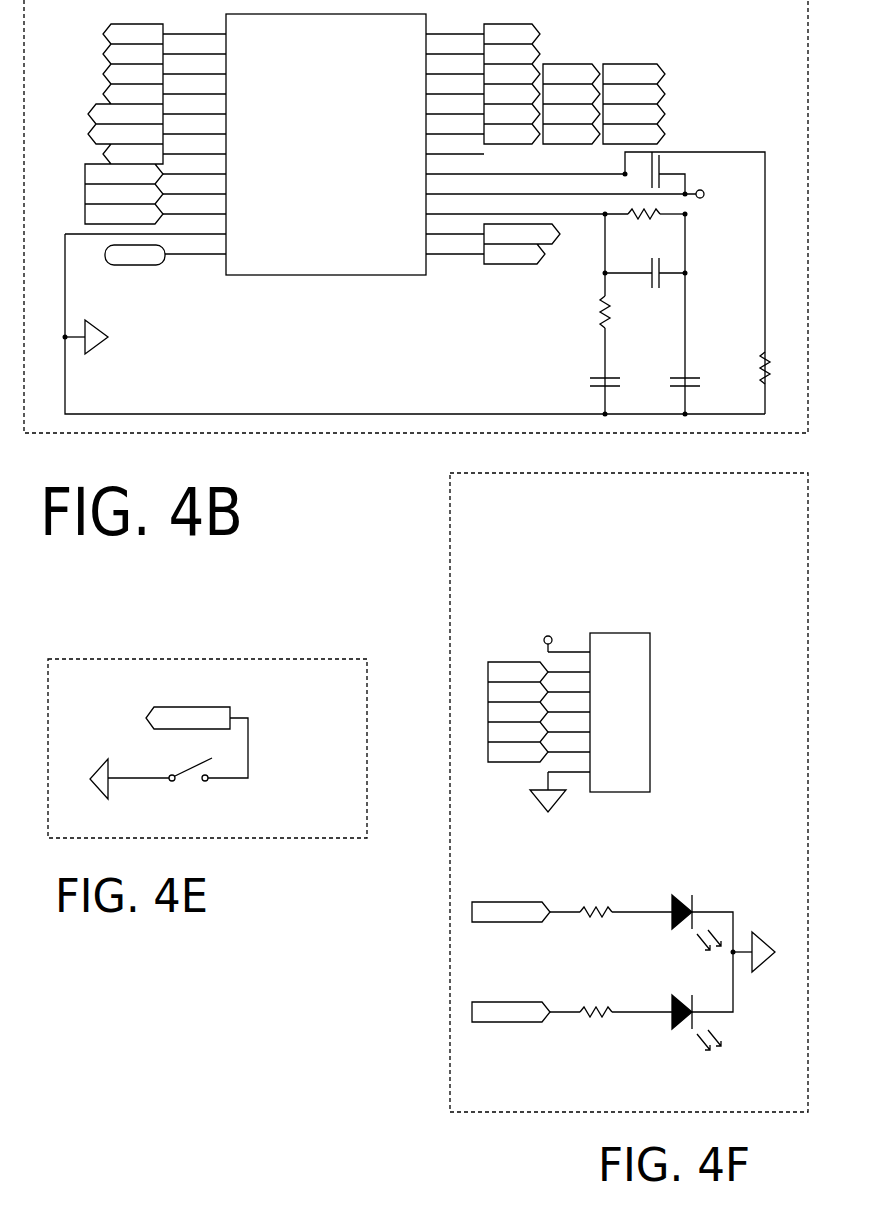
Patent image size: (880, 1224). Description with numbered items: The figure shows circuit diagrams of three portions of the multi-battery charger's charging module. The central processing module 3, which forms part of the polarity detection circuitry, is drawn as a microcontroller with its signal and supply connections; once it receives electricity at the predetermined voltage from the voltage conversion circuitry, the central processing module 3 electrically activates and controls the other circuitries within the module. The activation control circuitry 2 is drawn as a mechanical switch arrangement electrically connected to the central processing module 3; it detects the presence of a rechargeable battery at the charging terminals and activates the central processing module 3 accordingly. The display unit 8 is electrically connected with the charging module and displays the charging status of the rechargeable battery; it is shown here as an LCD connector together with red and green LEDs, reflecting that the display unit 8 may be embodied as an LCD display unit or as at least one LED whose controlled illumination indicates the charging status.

In FIG. 4B, the central processing module 3 is at (416, 216).
In FIG. 4E, the activation control circuitry 2 is at (207, 748).
In FIG. 4F, the display unit 8 is at (629, 792).